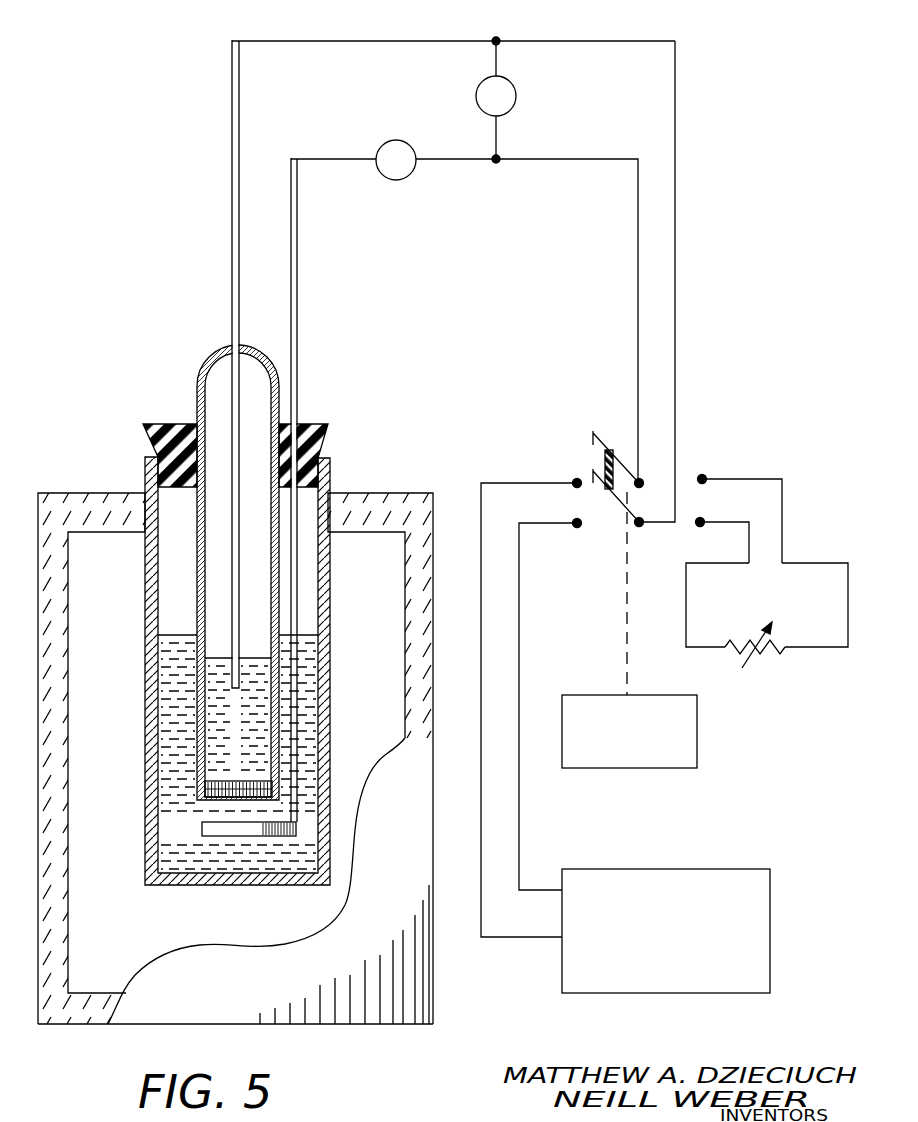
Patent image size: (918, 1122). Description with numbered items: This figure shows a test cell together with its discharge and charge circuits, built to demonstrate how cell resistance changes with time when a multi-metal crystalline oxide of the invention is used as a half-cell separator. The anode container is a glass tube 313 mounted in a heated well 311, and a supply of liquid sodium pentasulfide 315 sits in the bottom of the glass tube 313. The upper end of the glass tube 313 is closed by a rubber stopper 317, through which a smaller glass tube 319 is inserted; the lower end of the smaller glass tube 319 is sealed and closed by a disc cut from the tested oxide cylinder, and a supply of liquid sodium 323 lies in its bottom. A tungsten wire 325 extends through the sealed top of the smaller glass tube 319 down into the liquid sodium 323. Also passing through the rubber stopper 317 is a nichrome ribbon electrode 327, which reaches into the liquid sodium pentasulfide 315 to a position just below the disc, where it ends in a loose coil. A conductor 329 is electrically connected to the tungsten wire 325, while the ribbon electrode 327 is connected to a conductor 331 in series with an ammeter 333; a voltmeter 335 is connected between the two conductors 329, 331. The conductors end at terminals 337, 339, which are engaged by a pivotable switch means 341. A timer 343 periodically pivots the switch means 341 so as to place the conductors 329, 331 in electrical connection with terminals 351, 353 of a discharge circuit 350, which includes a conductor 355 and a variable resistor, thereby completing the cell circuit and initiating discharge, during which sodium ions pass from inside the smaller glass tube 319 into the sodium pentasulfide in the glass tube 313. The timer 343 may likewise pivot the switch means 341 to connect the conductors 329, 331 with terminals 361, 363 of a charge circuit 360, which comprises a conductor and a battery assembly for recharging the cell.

The heated well 311 is at (305, 1024).
The glass tube 313 is at (330, 472).
The liquid sodium pentasulfide 315 is at (165, 718).
The rubber stopper 317 is at (143, 424).
The smaller glass tube 319 is at (200, 370).
The liquid sodium 323 is at (230, 753).
The tungsten wire 325 is at (232, 260).
The nichrome ribbon electrode 327 is at (300, 305).
The conductor 329 is at (675, 127).
The conductor 331 is at (355, 159).
The ammeter 333 is at (415, 168).
The voltmeter 335 is at (398, 41).
The terminal 337 is at (639, 483).
The terminal 339 is at (639, 524).
The pivotable switch means 341 is at (618, 502).
The timer 343 is at (697, 751).
The discharge circuit 350 is at (766, 664).
The terminal 351 is at (702, 479).
The terminal 353 is at (700, 522).
The conductor 355 is at (852, 523).
The charge circuit 360 is at (663, 867).
The terminal 361 is at (577, 483).
The terminal 363 is at (577, 523).